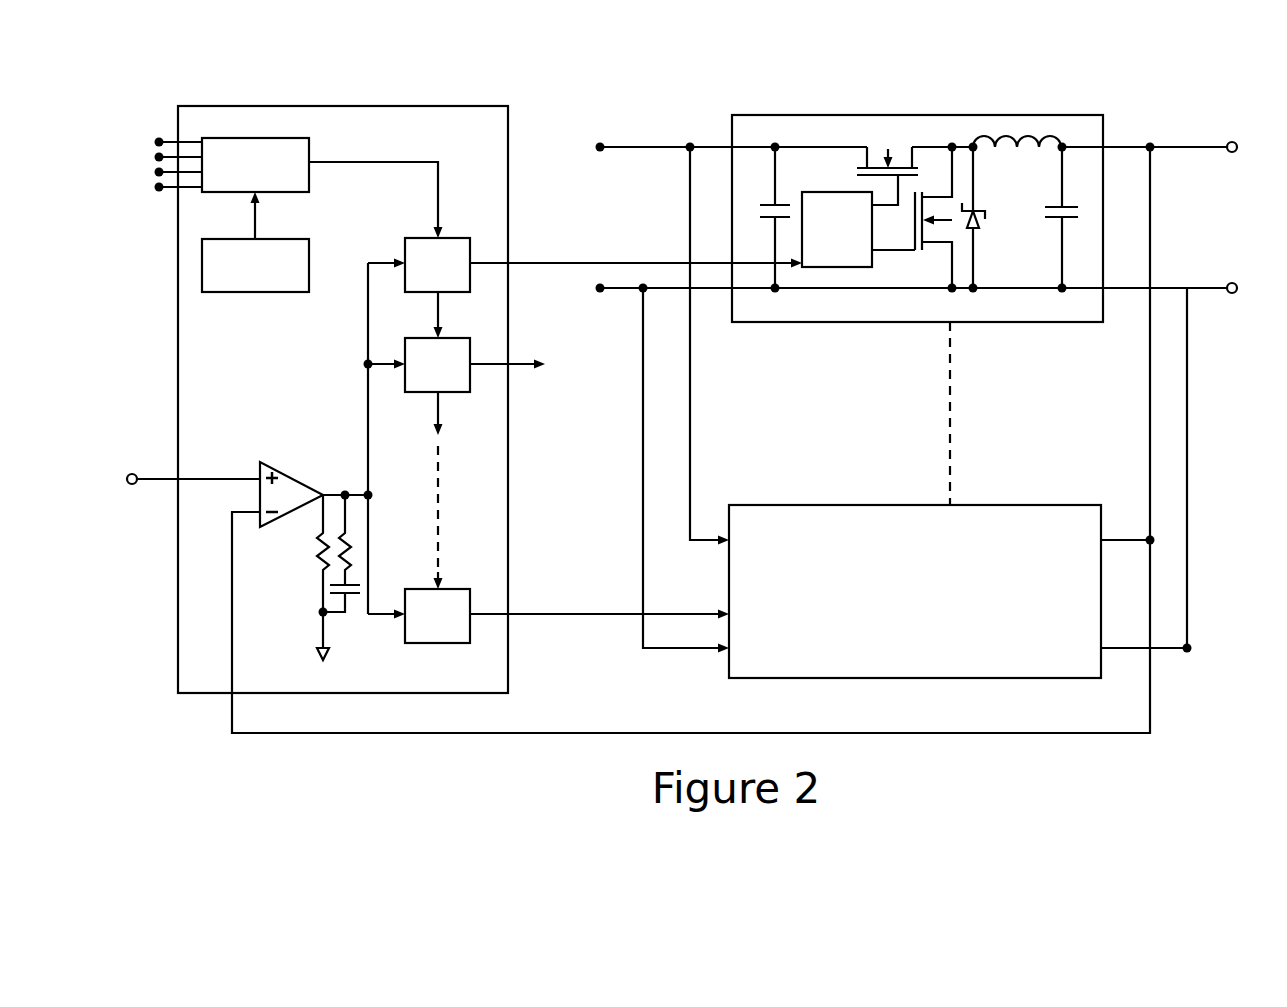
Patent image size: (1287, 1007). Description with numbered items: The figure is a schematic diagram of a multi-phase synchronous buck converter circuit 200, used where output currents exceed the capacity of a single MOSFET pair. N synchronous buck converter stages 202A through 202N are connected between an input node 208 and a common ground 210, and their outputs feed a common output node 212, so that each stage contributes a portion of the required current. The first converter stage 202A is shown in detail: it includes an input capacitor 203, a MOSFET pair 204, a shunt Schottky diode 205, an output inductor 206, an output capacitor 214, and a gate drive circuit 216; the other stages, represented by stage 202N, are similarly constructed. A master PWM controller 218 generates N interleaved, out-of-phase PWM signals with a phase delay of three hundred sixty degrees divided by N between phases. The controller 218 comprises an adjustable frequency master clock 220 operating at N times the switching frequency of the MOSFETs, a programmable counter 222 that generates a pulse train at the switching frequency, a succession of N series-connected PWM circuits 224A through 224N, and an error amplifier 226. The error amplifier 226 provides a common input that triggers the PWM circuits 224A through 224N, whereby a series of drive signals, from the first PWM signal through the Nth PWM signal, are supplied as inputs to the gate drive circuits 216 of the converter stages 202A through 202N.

The circuit 200 is at (692, 67).
The synchronous buck converter stage 202A is at (915, 115).
The synchronous buck converter stage 202N is at (823, 505).
The input capacitor 203 is at (760, 205).
The MOSFET pair 204 is at (859, 185).
The shunt Schottky diode 205 is at (979, 224).
The output inductor 206 is at (1018, 152).
The input node 208 is at (622, 145).
The common ground 210 is at (622, 292).
The output node 212 is at (1150, 145).
The output capacitor 214 is at (1048, 219).
The gate drive circuit 216 is at (831, 268).
The master PWM controller 218 is at (190, 693).
The adjustable frequency master clock 220 is at (253, 294).
The programmable counter 222 is at (312, 138).
The PWM circuit 224A is at (405, 240).
The PWM circuit 224N is at (402, 645).
The error amplifier 226 is at (290, 477).